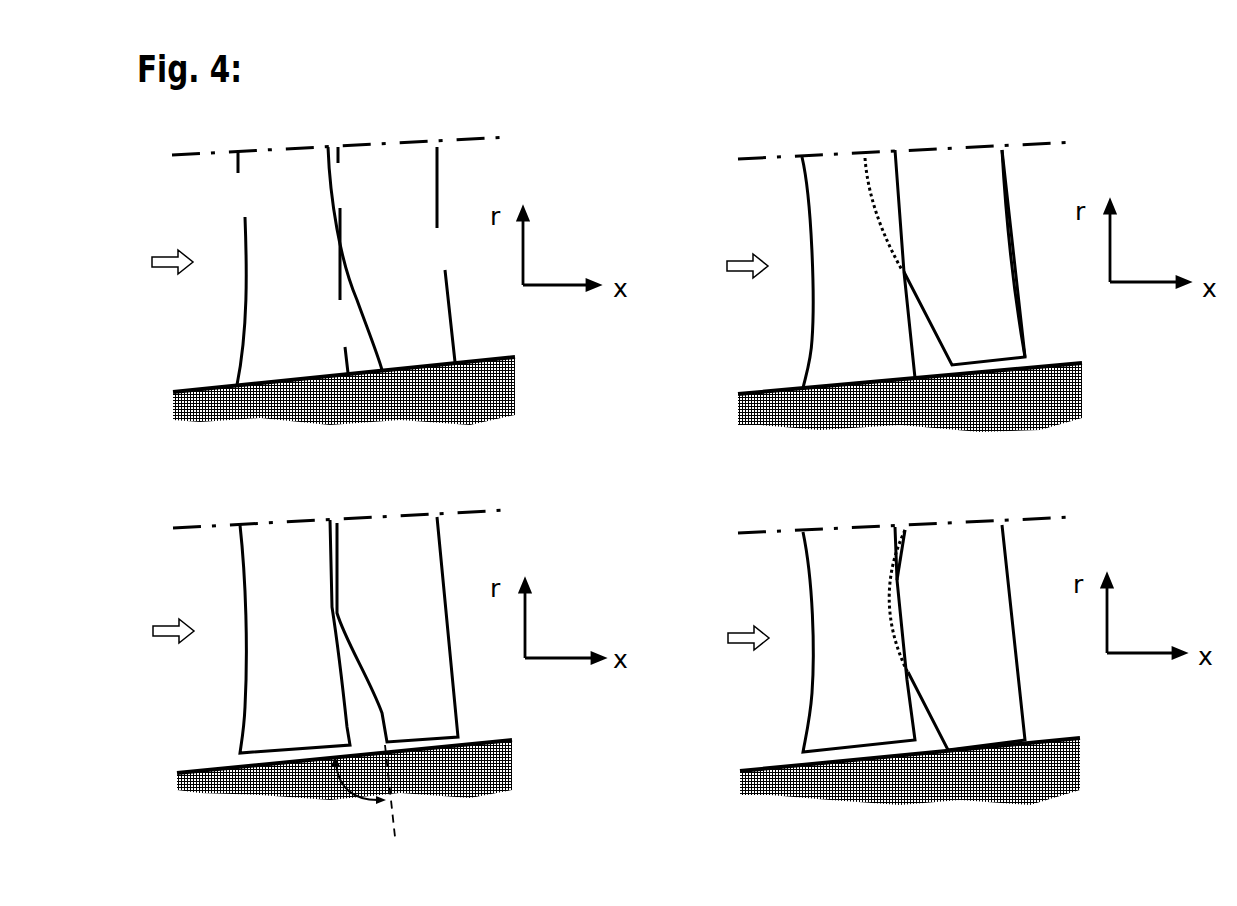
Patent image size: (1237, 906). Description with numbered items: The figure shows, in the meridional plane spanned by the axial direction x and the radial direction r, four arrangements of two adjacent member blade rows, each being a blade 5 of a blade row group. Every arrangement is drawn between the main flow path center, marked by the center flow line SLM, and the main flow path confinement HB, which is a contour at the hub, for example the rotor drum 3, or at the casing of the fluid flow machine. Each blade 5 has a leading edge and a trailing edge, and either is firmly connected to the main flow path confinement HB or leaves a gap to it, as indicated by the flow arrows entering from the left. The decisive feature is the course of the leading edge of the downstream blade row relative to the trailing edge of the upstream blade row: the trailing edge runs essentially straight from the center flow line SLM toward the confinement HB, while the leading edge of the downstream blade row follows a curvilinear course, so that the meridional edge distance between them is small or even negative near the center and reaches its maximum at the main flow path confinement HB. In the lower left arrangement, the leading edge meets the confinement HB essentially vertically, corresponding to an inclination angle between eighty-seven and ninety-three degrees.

The rotor drum 3 is at (1042, 828).
The blade 5 is at (544, 450).
The center flow line SLM is at (670, 321).
The main flow path confinement HB is at (667, 566).